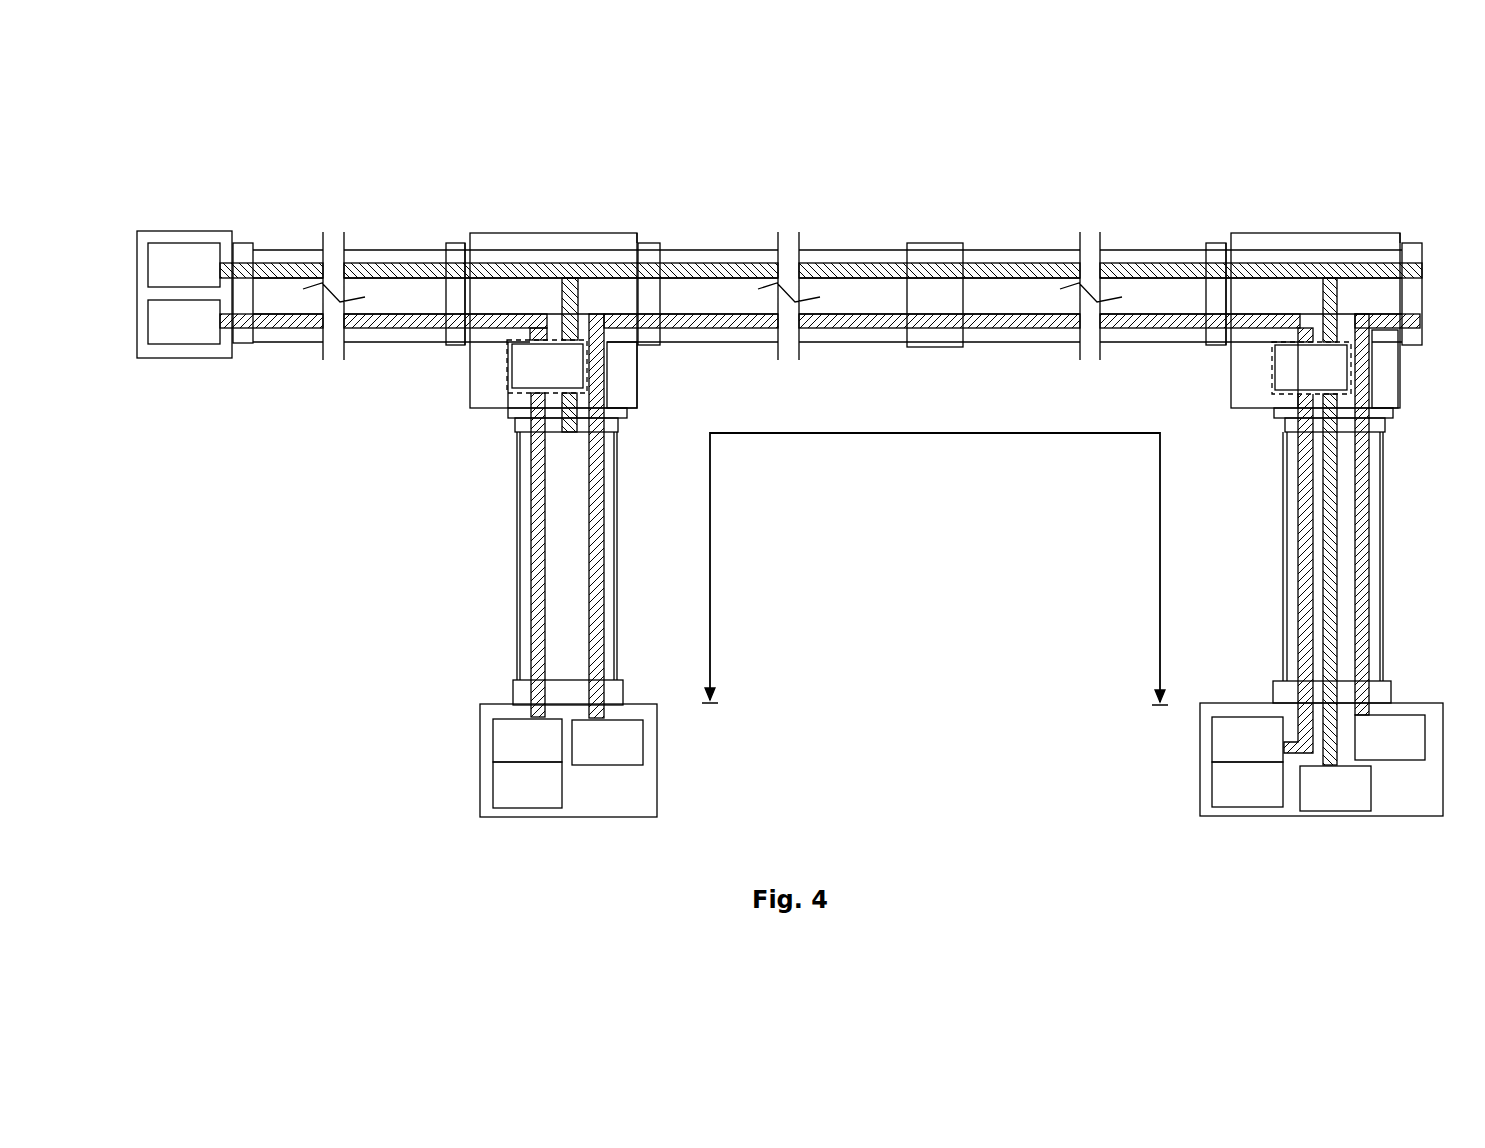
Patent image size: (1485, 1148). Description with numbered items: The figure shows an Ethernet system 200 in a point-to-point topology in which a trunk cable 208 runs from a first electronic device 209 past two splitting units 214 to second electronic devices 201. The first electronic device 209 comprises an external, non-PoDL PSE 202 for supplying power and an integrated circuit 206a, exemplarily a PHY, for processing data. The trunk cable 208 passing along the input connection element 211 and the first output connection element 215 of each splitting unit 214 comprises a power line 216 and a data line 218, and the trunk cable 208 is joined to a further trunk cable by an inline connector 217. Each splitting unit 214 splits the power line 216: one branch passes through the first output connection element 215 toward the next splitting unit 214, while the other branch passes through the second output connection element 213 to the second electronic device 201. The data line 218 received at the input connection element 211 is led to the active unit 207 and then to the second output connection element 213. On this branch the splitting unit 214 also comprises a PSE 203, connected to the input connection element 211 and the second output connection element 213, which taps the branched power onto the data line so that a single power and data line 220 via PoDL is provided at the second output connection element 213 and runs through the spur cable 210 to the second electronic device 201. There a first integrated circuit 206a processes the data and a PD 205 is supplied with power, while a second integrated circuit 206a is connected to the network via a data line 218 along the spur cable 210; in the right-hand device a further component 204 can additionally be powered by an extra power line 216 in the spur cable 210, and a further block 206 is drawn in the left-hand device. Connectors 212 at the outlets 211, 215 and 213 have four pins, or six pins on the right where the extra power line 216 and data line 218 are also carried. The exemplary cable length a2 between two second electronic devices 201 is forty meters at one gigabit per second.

The sampling system 200 is at (190, 122).
The second electronic device 201 is at (487, 717).
The external PSE 202 is at (202, 250).
The PSE 203 is at (512, 416).
The further component 204 is at (1332, 800).
The PD 205 is at (503, 788).
The valve 206 is at (633, 745).
The integrated circuit 206a is at (163, 340).
The active unit 207 is at (525, 378).
The trunk cable 208 is at (360, 347).
The first electronic device 209 is at (147, 236).
The spur cable 210 is at (515, 620).
The input connection element 211 is at (457, 343).
The connector 212 is at (455, 248).
The second output connection element 213 is at (518, 433).
The splitting unit 214 is at (557, 242).
The first output connection element 215 is at (640, 348).
The power line 216 is at (307, 270).
The inline connector 217 is at (940, 340).
The data line 218 is at (307, 323).
The power and data line 220 is at (540, 555).
The cable length a2 is at (935, 433).